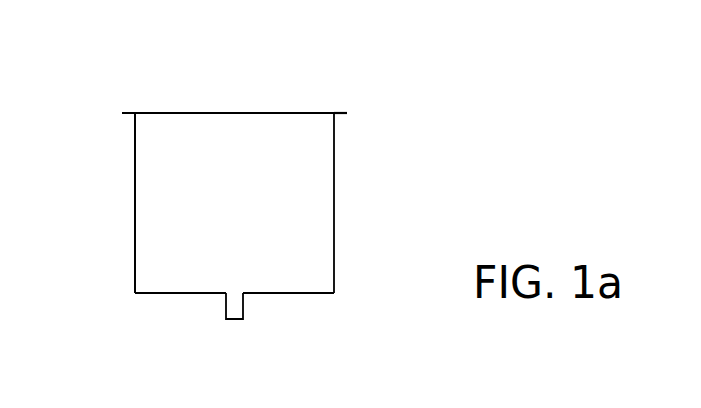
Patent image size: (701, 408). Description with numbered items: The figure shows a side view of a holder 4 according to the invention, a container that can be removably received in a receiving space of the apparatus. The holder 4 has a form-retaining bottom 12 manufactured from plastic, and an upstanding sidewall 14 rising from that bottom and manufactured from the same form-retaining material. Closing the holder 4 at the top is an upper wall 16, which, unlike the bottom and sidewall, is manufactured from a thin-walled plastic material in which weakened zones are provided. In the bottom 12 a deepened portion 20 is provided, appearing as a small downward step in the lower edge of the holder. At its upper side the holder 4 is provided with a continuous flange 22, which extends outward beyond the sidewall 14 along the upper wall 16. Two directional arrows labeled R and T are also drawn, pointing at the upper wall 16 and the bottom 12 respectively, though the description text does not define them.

The holder 4 is at (335, 228).
The form-retaining bottom 12 is at (152, 295).
The upstanding sidewall 14 is at (134, 177).
The upper wall 16 is at (250, 113).
The deepened portion 20 is at (243, 305).
The continuous flange 22 is at (342, 113).
The radial direction R is at (188, 102).
The thickness direction T is at (180, 302).